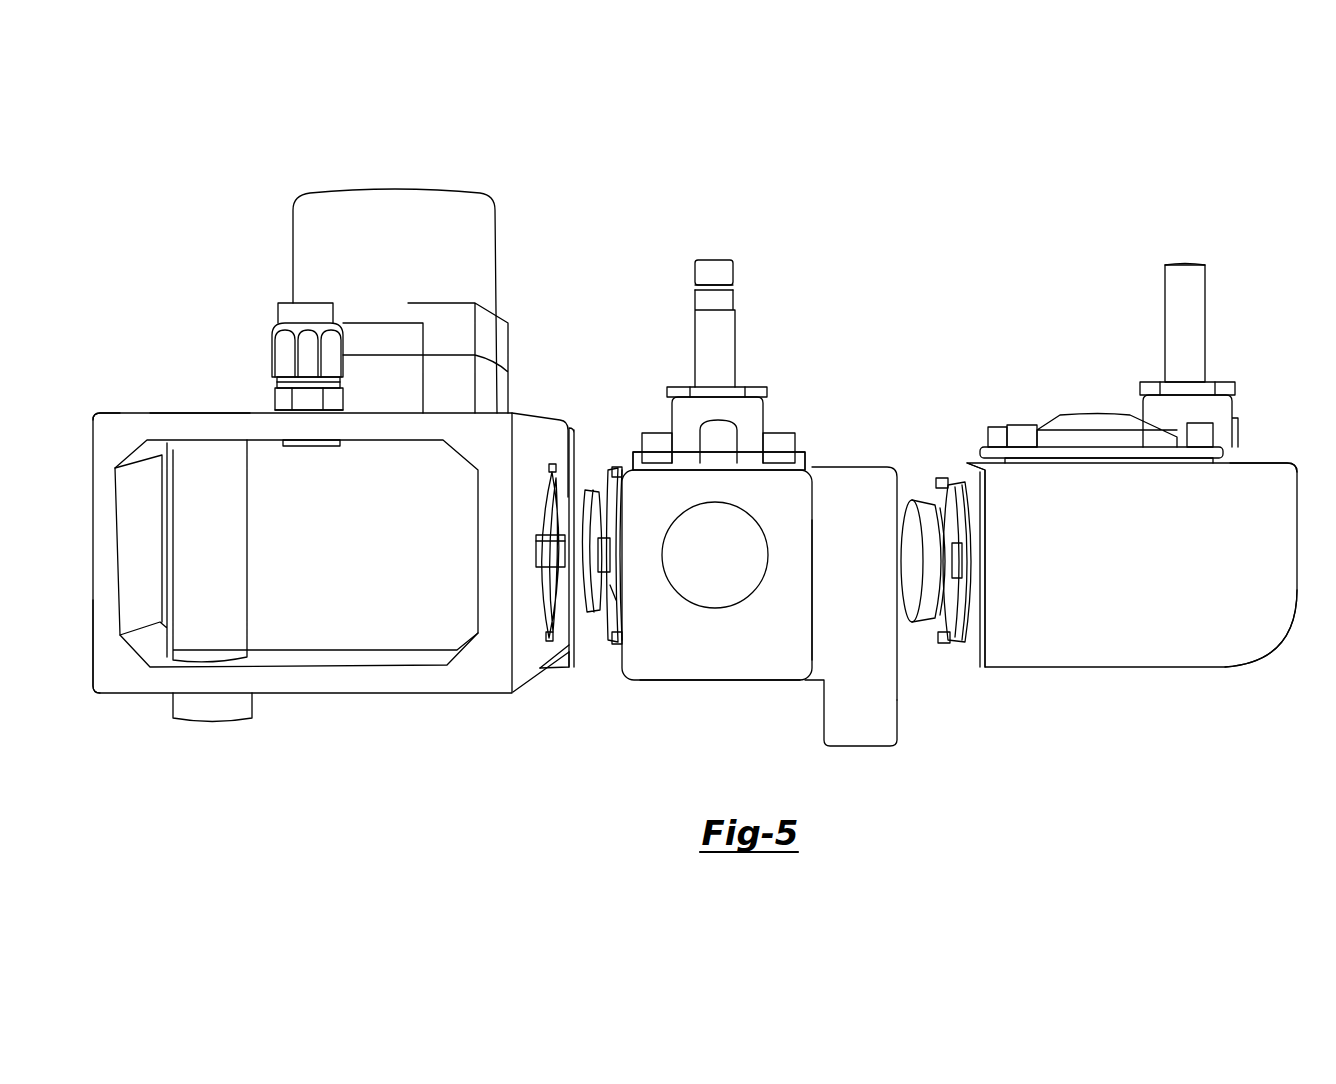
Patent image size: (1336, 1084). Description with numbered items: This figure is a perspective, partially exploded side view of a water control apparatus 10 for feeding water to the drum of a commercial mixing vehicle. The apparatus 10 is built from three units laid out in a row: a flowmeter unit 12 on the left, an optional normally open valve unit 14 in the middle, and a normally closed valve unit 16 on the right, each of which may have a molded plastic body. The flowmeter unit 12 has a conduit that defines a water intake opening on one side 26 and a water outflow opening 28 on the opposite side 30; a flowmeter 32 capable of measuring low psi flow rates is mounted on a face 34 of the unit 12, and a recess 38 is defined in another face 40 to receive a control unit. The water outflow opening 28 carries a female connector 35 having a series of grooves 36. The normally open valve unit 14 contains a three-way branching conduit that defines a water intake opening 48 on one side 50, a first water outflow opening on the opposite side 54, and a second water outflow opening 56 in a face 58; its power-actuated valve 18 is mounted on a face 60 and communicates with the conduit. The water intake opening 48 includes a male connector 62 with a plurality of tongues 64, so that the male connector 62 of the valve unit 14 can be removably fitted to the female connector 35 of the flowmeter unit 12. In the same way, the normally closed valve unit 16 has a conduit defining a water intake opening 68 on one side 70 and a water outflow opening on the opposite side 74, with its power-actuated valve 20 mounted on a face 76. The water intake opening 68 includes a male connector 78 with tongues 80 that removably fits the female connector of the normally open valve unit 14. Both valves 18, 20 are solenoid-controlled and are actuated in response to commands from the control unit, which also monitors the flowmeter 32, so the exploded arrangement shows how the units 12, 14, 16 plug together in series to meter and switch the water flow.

The water control apparatus 10 is at (960, 266).
The flowmeter unit 12 is at (424, 708).
The normally open valve unit 14 is at (718, 698).
The normally closed valve unit 16 is at (1152, 682).
The power-actuated valve 18 is at (660, 406).
The power-actuated valve 20 is at (1052, 411).
The side of the flowmeter unit 26 is at (92, 455).
The water outflow opening 28 is at (540, 552).
The opposite side of the flowmeter unit 30 is at (525, 438).
The flowmeter 32 is at (498, 211).
The face of the flowmeter unit 34 is at (195, 410).
The female connector 35 is at (552, 615).
The grooves 36 is at (572, 428).
The recess 38 is at (314, 636).
The face of the flowmeter unit 40 is at (472, 440).
The water intake opening 48 is at (592, 490).
The side of the normally open valve unit 50 is at (623, 660).
The opposite side of the normally open valve unit 54 is at (893, 700).
The second water outflow opening 56 is at (725, 564).
The face of the normally open valve unit 58 is at (797, 664).
The face of the normally open valve unit 60 is at (837, 465).
The male connector 62 is at (617, 598).
The tongues 64 is at (625, 468).
The water intake opening 68 is at (910, 567).
The side of the normally closed valve unit 70 is at (958, 474).
The opposite side of the normally closed valve unit 74 is at (1295, 557).
The face of the valve unit 76 is at (1275, 462).
The male connector 78 is at (975, 610).
The tongues 80 is at (950, 648).